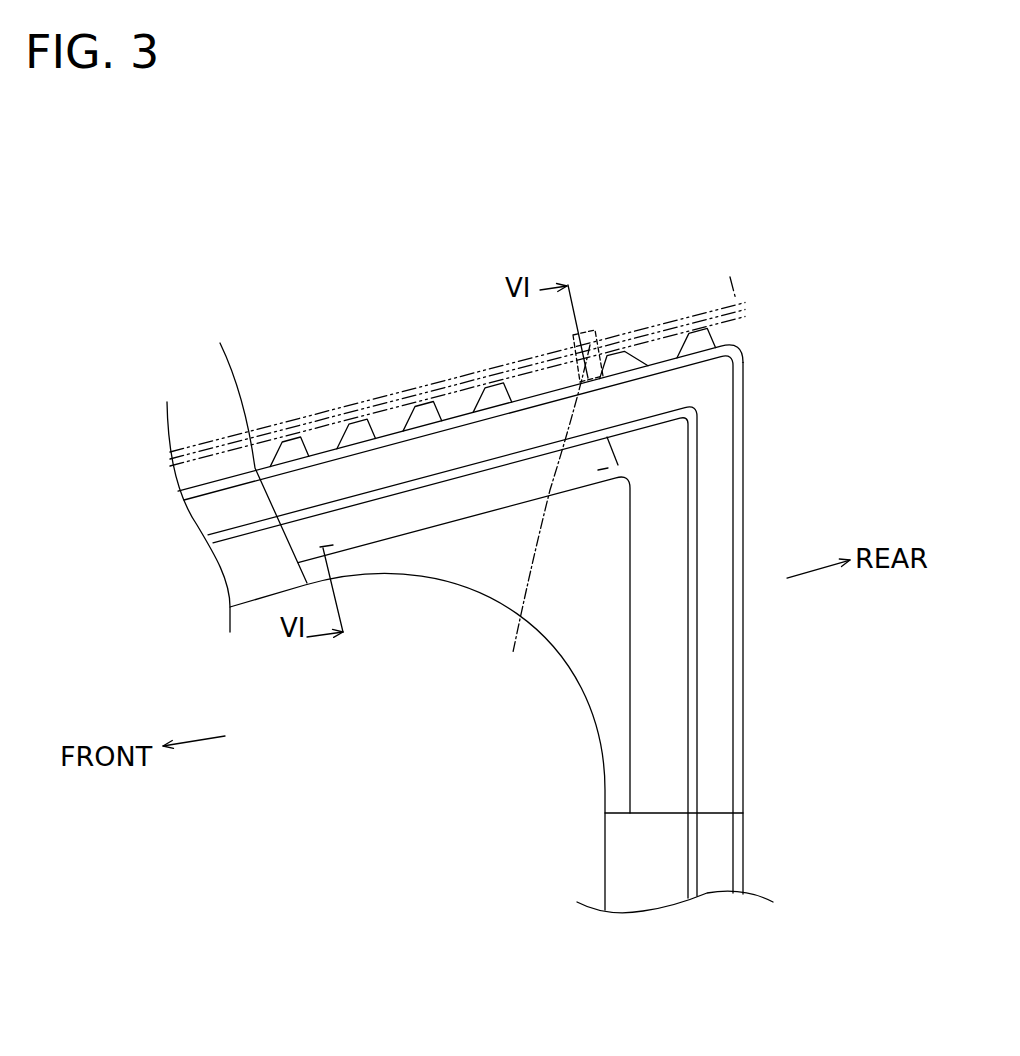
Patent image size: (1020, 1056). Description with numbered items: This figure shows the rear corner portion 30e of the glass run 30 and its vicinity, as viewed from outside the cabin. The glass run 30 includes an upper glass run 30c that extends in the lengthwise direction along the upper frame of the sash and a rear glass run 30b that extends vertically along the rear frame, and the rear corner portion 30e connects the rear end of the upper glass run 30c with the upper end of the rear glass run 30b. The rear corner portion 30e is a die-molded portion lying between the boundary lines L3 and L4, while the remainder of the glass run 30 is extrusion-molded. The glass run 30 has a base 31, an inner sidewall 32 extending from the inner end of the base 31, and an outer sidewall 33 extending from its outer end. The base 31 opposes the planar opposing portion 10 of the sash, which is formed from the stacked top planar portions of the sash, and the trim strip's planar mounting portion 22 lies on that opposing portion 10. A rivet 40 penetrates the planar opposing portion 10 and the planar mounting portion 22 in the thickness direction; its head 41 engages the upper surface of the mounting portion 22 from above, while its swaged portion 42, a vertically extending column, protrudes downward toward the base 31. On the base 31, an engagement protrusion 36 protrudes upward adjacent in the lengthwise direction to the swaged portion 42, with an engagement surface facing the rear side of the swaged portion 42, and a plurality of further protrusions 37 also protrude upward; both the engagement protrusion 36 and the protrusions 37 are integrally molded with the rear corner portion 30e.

The planar opposing portion 10 is at (186, 481).
The planar mounting portion 22 is at (185, 480).
The glass run 30 is at (746, 457).
The rear glass run 30b is at (745, 874).
The upper glass run 30c is at (247, 603).
The rear corner portion 30e is at (745, 393).
The base 31 is at (393, 437).
The inner sidewall 32 is at (403, 522).
The outer sidewall 33 is at (457, 453).
The engagement protrusion 36 is at (621, 351).
The protrusions 37 is at (357, 427).
The rivet 40 is at (562, 338).
The head 41 is at (590, 345).
The swaged portion 42 is at (544, 522).
The boundary line L3 is at (253, 445).
The boundary line L4 is at (718, 813).